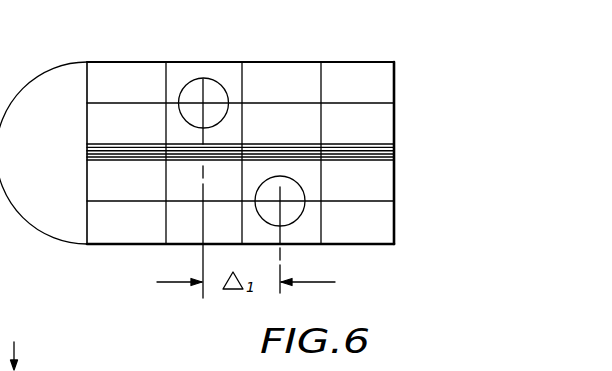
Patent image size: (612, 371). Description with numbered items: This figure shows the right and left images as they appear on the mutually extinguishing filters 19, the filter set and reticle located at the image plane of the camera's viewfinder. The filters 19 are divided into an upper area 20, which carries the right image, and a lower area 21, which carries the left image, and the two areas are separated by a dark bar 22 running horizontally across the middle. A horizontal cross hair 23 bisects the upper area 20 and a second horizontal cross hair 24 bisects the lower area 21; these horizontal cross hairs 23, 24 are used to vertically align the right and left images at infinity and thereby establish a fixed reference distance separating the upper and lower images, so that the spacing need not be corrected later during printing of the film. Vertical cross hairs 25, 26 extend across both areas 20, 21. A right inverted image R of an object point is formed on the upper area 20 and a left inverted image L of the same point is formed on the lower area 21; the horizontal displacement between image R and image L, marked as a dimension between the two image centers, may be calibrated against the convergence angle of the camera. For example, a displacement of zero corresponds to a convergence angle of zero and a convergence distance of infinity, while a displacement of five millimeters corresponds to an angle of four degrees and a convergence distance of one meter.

The mutually extinguishing filters 19 is at (99, 61).
The upper area 20 is at (391, 81).
The lower area 21 is at (396, 222).
The dark bar 22 is at (395, 152).
The horizontal cross hair 23 is at (87, 103).
The horizontal cross hair 24 is at (87, 201).
The vertical cross hair 25 is at (167, 65).
The vertical cross hair 26 is at (242, 72).
The right inverted image of point O R is at (203, 103).
The left inverted image of point O L is at (280, 201).